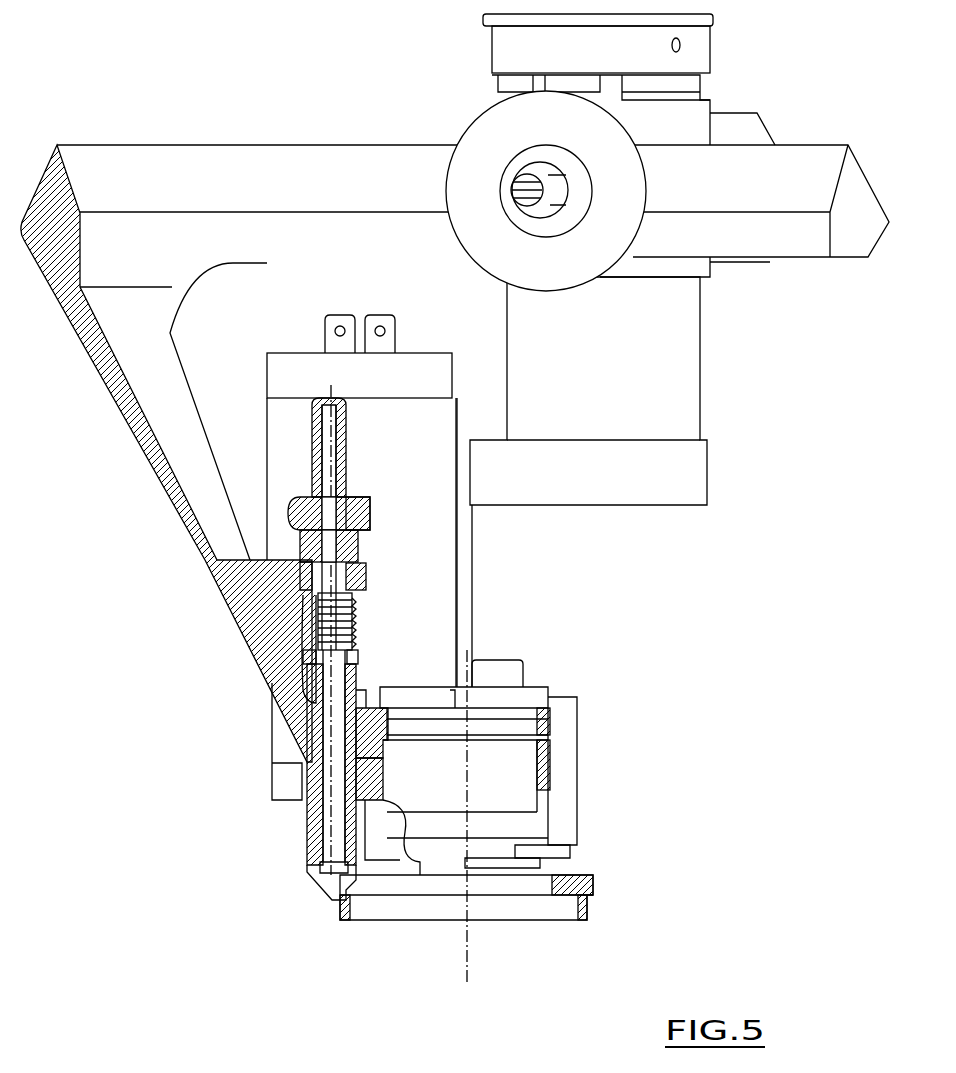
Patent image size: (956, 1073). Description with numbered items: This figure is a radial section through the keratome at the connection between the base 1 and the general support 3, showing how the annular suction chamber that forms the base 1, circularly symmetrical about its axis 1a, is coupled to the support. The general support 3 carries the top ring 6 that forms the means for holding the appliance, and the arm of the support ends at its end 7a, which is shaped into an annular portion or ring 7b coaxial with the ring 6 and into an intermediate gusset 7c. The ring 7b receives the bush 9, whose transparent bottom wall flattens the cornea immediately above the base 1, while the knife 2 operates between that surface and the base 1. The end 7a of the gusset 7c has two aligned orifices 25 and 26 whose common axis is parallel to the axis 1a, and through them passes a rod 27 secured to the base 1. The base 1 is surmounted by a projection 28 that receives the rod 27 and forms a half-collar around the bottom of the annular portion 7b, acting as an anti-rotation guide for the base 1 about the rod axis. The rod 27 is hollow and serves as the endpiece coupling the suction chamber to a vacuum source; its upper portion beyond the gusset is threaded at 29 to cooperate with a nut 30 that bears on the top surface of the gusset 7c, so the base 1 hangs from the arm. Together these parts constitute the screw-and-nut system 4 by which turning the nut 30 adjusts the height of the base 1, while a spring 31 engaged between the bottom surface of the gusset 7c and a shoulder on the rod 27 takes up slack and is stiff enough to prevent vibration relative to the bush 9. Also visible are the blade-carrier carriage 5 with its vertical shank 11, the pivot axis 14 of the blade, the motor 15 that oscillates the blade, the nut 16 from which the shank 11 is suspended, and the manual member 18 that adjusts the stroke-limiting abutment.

The base 1 is at (585, 877).
The axis 1a is at (468, 953).
The knife 2 is at (417, 880).
The general support 3 is at (302, 132).
The screw-and-nut system 4 is at (334, 867).
The blade-carrier carriage 5 is at (502, 517).
The top ring 6 is at (70, 195).
The end of the arm 7a is at (280, 660).
The ring (annular portion) 7b is at (548, 754).
The intermediate gusset 7c is at (366, 580).
The bush 9 is at (524, 799).
The vertical shank 11 is at (672, 380).
The pivot axis 14 is at (504, 674).
The motor 15 is at (420, 372).
The nut 16 is at (700, 47).
The manual member 18 is at (563, 265).
The orifice 25 is at (347, 720).
The orifice 26 is at (298, 547).
The rod 27 is at (346, 427).
The projection 28 is at (304, 820).
The threaded portion 29 is at (357, 512).
The nut 30 is at (290, 505).
The spring 31 is at (353, 626).